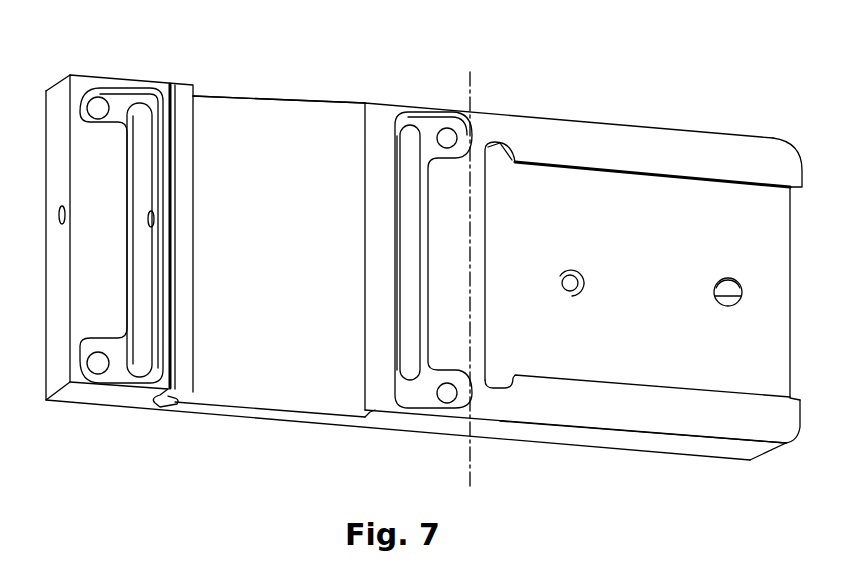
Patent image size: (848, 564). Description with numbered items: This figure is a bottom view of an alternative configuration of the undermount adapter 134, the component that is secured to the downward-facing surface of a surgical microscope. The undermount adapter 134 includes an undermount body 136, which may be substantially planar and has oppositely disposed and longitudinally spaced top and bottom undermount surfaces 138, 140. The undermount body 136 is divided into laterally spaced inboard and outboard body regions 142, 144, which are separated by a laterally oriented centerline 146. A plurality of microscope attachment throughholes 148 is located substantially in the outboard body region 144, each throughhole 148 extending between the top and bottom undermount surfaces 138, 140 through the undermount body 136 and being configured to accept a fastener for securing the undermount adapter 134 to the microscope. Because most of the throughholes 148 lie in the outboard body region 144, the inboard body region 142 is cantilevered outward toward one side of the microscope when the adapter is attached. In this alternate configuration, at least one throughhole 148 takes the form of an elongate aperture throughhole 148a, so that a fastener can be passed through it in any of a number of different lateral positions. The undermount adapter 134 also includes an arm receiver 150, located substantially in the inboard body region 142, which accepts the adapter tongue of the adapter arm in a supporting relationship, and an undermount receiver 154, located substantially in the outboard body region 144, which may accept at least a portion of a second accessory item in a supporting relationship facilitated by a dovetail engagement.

The undermount adapter 134 is at (232, 448).
The undermount body 136 is at (518, 145).
The top undermount surface 138 is at (665, 126).
The bottom undermount surface 140 is at (700, 418).
The inboard body region 142 is at (637, 458).
The outboard body region 144 is at (268, 428).
The centerline 146 is at (472, 457).
The microscope attachment throughhole 148 is at (98, 105).
The elongate aperture throughhole 148a is at (150, 372).
The arm receiver 150 is at (670, 303).
The undermount receiver 154 is at (291, 285).